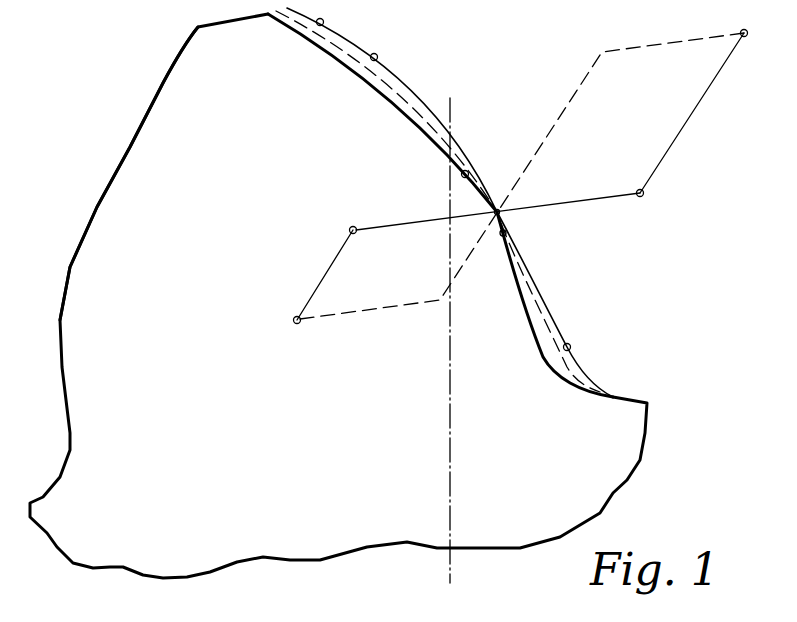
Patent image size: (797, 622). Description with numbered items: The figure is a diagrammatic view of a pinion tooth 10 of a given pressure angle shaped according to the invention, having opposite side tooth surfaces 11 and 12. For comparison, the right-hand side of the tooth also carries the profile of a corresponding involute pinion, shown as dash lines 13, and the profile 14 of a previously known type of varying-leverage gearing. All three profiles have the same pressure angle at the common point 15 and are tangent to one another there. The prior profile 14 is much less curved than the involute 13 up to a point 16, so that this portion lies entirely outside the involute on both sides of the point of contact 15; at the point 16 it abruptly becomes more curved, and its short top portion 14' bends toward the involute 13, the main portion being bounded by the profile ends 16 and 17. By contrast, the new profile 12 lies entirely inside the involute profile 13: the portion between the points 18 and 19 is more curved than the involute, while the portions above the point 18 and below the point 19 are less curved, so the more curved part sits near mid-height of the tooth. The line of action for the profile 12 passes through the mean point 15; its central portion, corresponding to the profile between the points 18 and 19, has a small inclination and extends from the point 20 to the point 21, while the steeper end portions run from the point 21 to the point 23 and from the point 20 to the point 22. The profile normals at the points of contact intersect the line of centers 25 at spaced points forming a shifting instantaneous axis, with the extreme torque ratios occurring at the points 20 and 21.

The pinion tooth 10 is at (304, 545).
The tooth surface 11 is at (70, 270).
The tooth profile 12 is at (523, 290).
The involute profile 13 is at (562, 330).
The profile of prior varying-leverage gearing 14 is at (555, 304).
The top portion of prior profile 14' is at (392, 110).
The common point 15 is at (497, 208).
The transition point 16 is at (378, 56).
The profile end 17 is at (571, 347).
The upper profile point 18 is at (468, 171).
The lower profile point 19 is at (501, 237).
The line-of-action point 20 is at (353, 226).
The line-of-action point 21 is at (643, 196).
The line-of-action end point 22 is at (294, 323).
The line-of-action end point 23 is at (746, 36).
The line of centers 25 is at (452, 453).